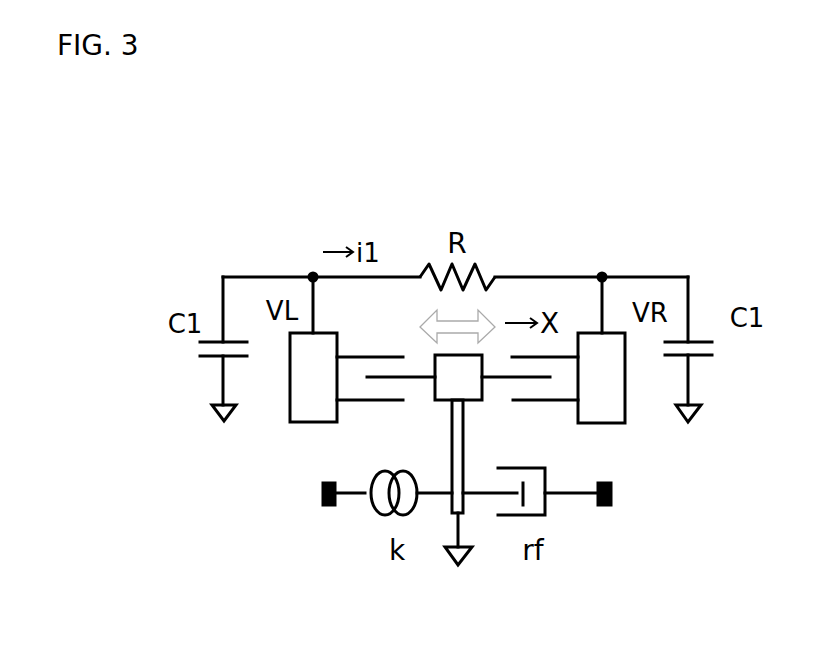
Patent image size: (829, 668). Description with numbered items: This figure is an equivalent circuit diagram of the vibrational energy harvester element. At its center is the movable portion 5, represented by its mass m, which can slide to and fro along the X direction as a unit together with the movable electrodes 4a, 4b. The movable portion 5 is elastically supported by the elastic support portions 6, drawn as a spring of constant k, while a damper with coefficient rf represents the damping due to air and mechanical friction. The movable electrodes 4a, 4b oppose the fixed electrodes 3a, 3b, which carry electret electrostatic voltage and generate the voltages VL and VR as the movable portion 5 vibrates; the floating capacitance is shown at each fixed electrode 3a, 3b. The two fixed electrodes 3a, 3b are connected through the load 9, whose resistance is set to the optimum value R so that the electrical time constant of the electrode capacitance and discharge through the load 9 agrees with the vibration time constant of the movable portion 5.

The load 9 is at (477, 268).
The fixed electrode 3a is at (347, 404).
The fixed electrode 3b is at (560, 401).
The movable electrode 4a is at (415, 379).
The movable electrode 4b is at (498, 380).
The movable portion 5 is at (452, 398).
The elastic support portions 6 is at (463, 492).